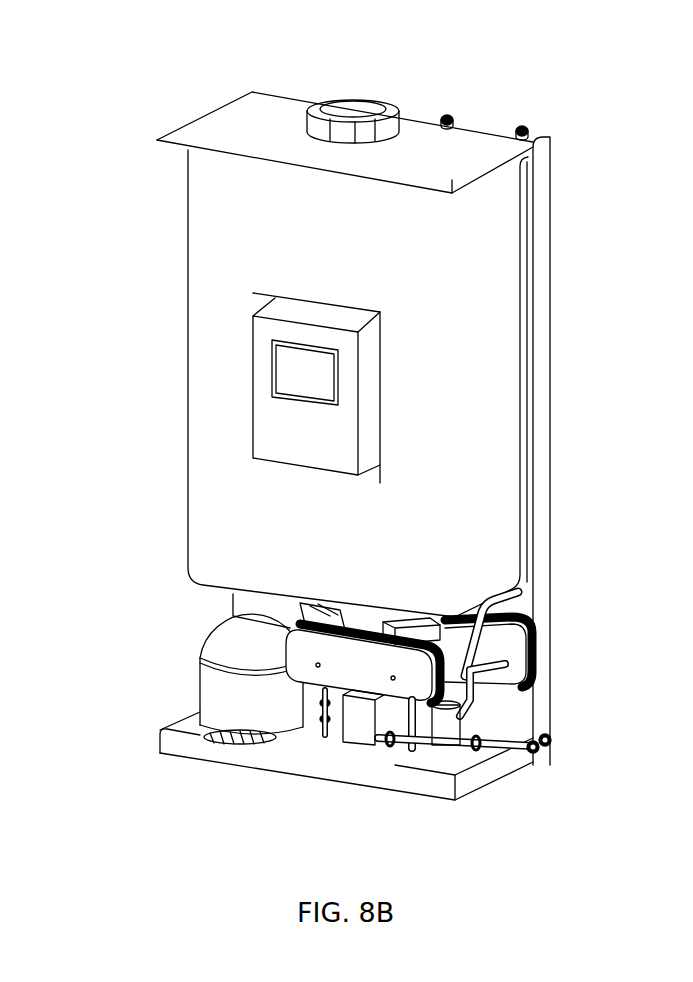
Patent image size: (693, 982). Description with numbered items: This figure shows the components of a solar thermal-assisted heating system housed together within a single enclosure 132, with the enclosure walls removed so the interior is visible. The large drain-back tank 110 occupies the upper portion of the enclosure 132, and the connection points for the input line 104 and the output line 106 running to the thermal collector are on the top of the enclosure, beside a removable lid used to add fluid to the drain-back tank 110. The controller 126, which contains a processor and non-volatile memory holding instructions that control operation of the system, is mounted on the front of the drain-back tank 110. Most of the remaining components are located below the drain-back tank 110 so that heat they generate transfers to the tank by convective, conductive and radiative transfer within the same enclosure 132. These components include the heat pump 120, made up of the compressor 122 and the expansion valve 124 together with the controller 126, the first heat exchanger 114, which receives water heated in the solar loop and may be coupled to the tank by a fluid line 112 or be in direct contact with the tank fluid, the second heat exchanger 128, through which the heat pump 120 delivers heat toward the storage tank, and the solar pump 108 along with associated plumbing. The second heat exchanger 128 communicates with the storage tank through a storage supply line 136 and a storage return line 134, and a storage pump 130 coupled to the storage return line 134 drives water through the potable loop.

The input line 104 is at (528, 129).
The output line 106 is at (449, 117).
The solar pump 108 is at (344, 745).
The drain-back tank 110 is at (217, 514).
The fluid line 112 is at (447, 641).
The first heat exchanger 114 is at (300, 672).
The heat pump 120 is at (337, 624).
The compressor 122 is at (228, 644).
The expansion valve 124 is at (407, 625).
The controller 126 is at (272, 420).
The second heat exchanger 128 is at (532, 622).
The storage pump 130 is at (452, 754).
The enclosure 132 is at (553, 213).
The storage return line 134 is at (552, 755).
The storage supply line 136 is at (557, 740).